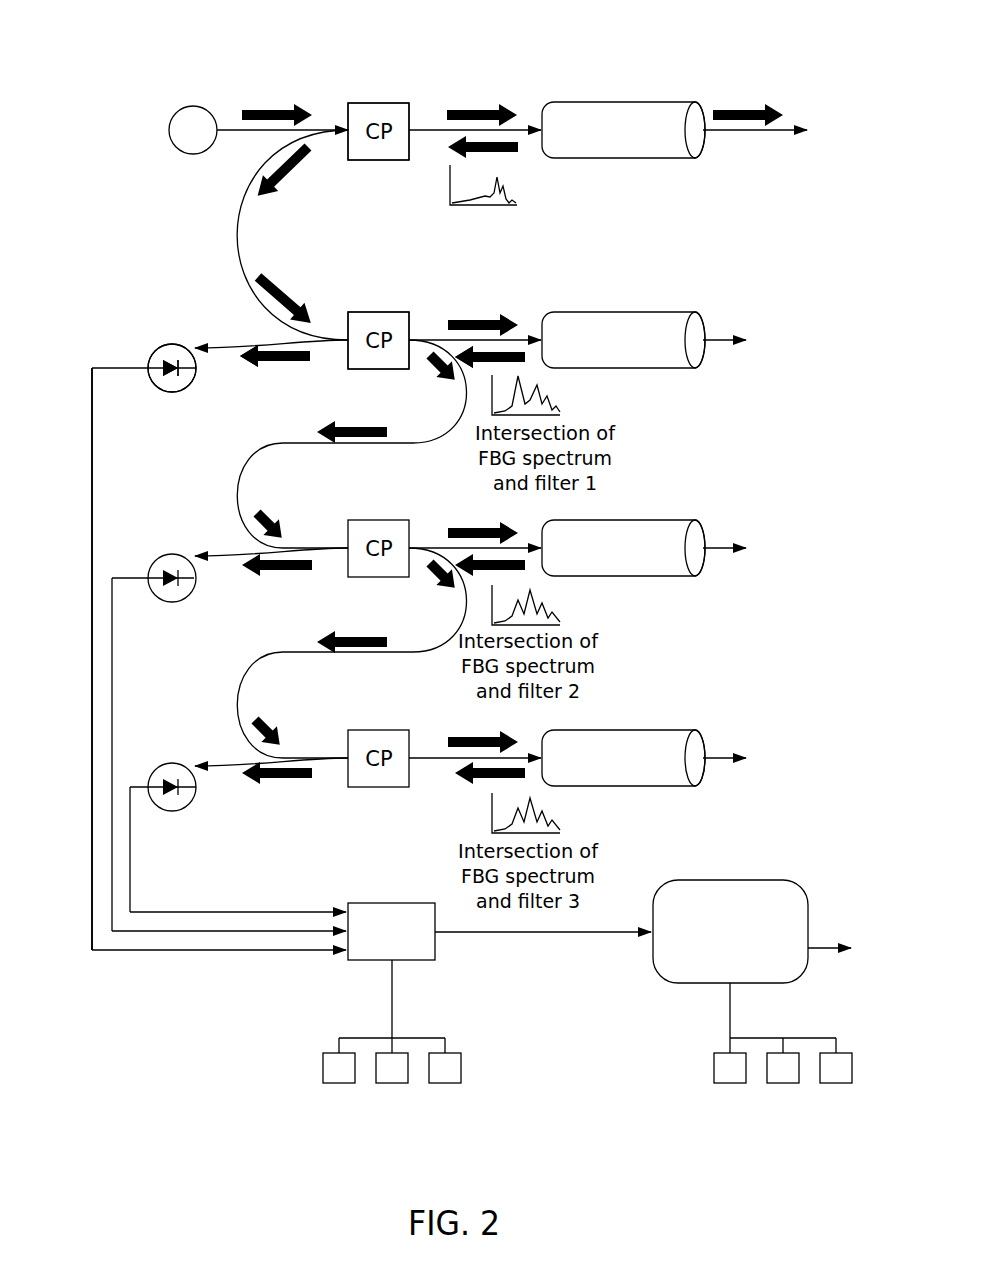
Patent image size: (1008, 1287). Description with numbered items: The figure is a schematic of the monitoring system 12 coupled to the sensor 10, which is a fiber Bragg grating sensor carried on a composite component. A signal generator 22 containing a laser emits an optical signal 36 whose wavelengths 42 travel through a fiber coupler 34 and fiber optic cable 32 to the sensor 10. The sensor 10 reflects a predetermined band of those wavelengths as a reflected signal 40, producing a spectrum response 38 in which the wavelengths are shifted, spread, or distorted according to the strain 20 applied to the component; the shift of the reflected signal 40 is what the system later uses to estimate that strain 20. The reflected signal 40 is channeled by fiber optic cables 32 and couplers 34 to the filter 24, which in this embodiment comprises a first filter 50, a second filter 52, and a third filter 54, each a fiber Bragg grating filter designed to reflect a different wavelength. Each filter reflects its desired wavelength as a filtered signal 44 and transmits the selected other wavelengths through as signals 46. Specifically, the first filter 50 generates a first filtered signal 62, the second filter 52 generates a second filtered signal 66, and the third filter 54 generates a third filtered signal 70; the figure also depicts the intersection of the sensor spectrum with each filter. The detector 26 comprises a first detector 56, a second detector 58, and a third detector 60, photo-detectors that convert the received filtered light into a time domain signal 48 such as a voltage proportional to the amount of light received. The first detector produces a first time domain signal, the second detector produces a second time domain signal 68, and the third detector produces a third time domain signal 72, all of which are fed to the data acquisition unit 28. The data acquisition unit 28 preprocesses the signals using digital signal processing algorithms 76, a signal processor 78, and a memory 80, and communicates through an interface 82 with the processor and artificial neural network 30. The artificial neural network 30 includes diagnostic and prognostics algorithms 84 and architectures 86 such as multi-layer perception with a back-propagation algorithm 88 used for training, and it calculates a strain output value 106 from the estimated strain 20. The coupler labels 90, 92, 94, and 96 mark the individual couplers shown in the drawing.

The sensor 10 is at (665, 103).
The monitoring system 12 is at (84, 345).
The strain 20 is at (592, 100).
The signal generator 22 is at (193, 106).
The filter 24 is at (592, 309).
The detector 26 is at (170, 341).
The data acquisition unit 28 is at (363, 960).
The processor with artificial neural network 30 is at (730, 880).
The fiber optic cable 32 is at (243, 190).
The fiber coupler 34 is at (378, 103).
The optical signal 36 is at (255, 108).
The spectrum response 38 is at (510, 192).
The reflected signal 40 is at (514, 128).
The wavelengths 42 is at (296, 102).
The filtered signal 44 is at (512, 340).
The signals 46 is at (744, 346).
The time domain signal 48 is at (90, 455).
The first filter 50 is at (665, 312).
The second filter 52 is at (665, 520).
The third filter 54 is at (665, 730).
The first detector 56 is at (150, 360).
The second detector 58 is at (172, 554).
The third detector 60 is at (172, 763).
The first filtered signal 62 is at (382, 356).
The second filtered signal 66 is at (540, 572).
The second time domain signal 68 is at (112, 672).
The third filtered signal 70 is at (540, 782).
The third time domain signal 72 is at (130, 882).
The digital signal processing algorithms 76 is at (339, 1083).
The signal processor 78 is at (392, 1083).
The memory 80 is at (445, 1083).
The interface 82 is at (435, 935).
The diagnostic and prognostics algorithms 84 is at (730, 1083).
The architectures 86 is at (783, 1083).
The back-propagation algorithm 88 is at (836, 1083).
The first coupler 90 is at (397, 103).
The second coupler 92 is at (397, 312).
The third coupler 94 is at (364, 520).
The fourth coupler 96 is at (364, 730).
The strain output value 106 is at (852, 948).